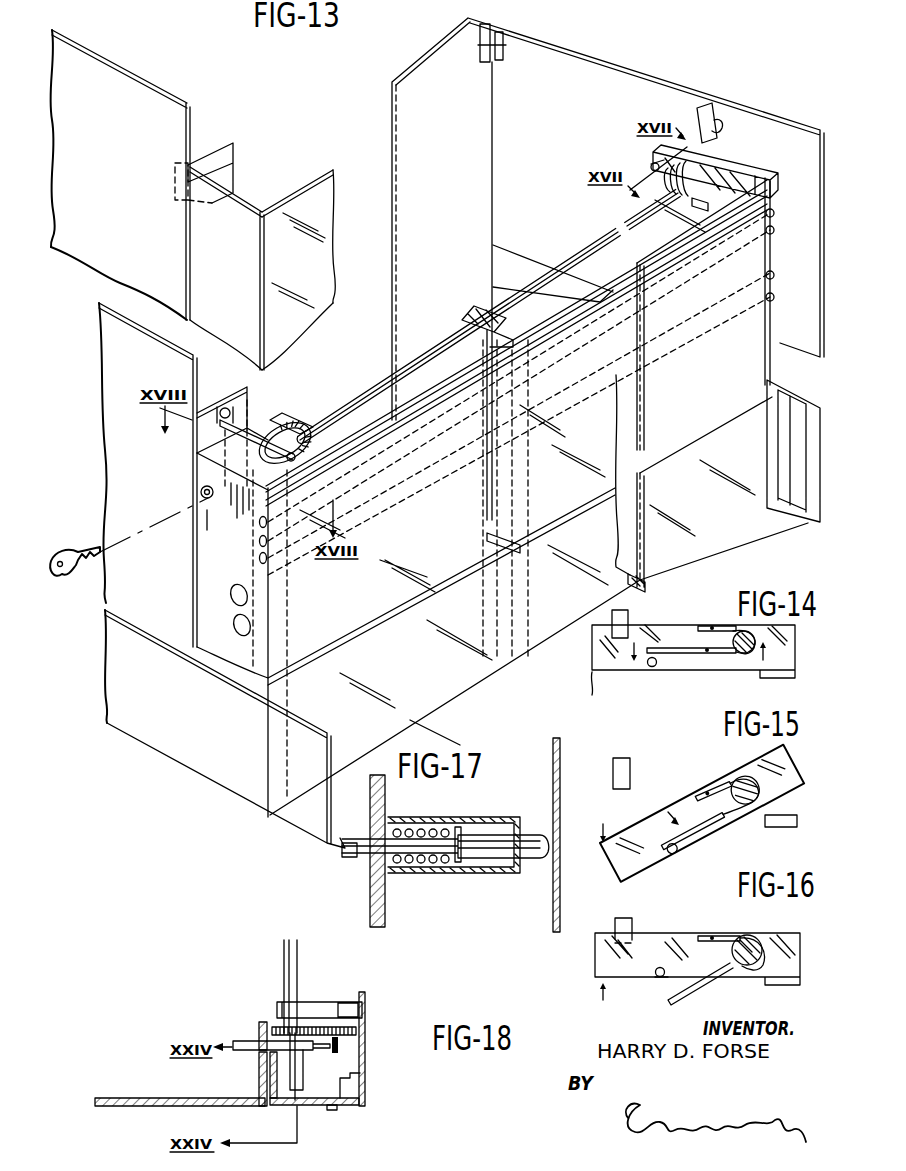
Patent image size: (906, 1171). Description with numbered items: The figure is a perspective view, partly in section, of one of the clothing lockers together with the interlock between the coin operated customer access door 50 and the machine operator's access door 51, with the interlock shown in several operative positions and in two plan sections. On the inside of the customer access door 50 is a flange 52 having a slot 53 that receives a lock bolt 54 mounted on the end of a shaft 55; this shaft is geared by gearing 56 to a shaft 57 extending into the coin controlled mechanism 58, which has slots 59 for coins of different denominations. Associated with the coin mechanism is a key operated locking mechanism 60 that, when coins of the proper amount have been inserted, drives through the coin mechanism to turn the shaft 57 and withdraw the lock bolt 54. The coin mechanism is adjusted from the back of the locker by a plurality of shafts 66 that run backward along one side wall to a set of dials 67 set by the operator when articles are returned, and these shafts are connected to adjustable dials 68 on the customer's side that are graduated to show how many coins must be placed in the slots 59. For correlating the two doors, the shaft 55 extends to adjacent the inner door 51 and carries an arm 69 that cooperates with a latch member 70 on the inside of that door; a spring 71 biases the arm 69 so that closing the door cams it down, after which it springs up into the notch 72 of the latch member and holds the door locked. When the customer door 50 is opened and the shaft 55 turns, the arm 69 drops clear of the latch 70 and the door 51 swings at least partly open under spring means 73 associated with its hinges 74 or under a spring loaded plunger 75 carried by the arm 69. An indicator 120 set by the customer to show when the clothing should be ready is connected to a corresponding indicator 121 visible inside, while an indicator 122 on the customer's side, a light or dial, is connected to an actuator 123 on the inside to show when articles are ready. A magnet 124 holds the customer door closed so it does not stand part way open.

In FIG. 13, the customer access door 50 is at (140, 380).
In FIG. 18, the customer access door 50 is at (233, 1107).
In FIG. 13, the access door 51 is at (628, 88).
In FIG. 17, the access door 51 is at (562, 809).
In FIG. 13, the flange 52 is at (249, 412).
In FIG. 18, the flange 52 is at (258, 1076).
In FIG. 13, the slot 53 is at (222, 409).
In FIG. 18, the slot 53 is at (261, 1026).
In FIG. 13, the lock bolt 54 is at (252, 422).
In FIG. 18, the lock bolt 54 is at (240, 1044).
In FIG. 13, the shaft 55 is at (350, 402).
In FIG. 14, the shaft 55 is at (748, 655).
In FIG. 15, the shaft 55 is at (740, 780).
In FIG. 16, the shaft 55 is at (758, 945).
In FIG. 18, the shaft 55 is at (291, 991).
In FIG. 13, the gearing 56 is at (315, 426).
In FIG. 18, the gearing 56 is at (364, 1031).
In FIG. 13, the shaft 57 is at (288, 460).
In FIG. 18, the shaft 57 is at (345, 1047).
In FIG. 13, the coin controlled mechanism 58 is at (245, 462).
In FIG. 18, the coin controlled mechanism 58 is at (342, 1067).
In FIG. 13, the slots 59 is at (237, 502).
In FIG. 13, the key operated locking mechanism 60 is at (201, 491).
In FIG. 13, the shafts 66 is at (398, 447).
In FIG. 13, the dials 67 is at (774, 216).
In FIG. 13, the adjustable dials 68 is at (272, 527).
In FIG. 13, the arm 69 is at (692, 167).
In FIG. 14, the arm 69 is at (640, 643).
In FIG. 15, the arm 69 is at (660, 827).
In FIG. 16, the arm 69 is at (660, 945).
In FIG. 17, the arm 69 is at (382, 804).
In FIG. 13, the latch member 70 is at (723, 106).
In FIG. 14, the latch member 70 is at (619, 612).
In FIG. 15, the latch member 70 is at (630, 776).
In FIG. 16, the latch member 70 is at (615, 922).
In FIG. 13, the spring 71 is at (680, 196).
In FIG. 14, the spring 71 is at (705, 628).
In FIG. 15, the spring 71 is at (705, 796).
In FIG. 16, the spring 71 is at (721, 938).
In FIG. 13, the notch 72 is at (715, 130).
In FIG. 13, the spring means 73 is at (499, 64).
In FIG. 13, the hinges 74 is at (505, 45).
In FIG. 13, the spring loaded plunger 75 is at (675, 150).
In FIG. 14, the spring loaded plunger 75 is at (653, 667).
In FIG. 15, the spring loaded plunger 75 is at (683, 852).
In FIG. 16, the spring loaded plunger 75 is at (660, 978).
In FIG. 17, the spring loaded plunger 75 is at (528, 832).
In FIG. 13, the indicator 120 is at (235, 585).
In FIG. 13, the indicator 121 is at (775, 278).
In FIG. 13, the indicator 122 is at (241, 631).
In FIG. 13, the actuator 123 is at (775, 300).
In FIG. 13, the magnet 124 is at (201, 149).